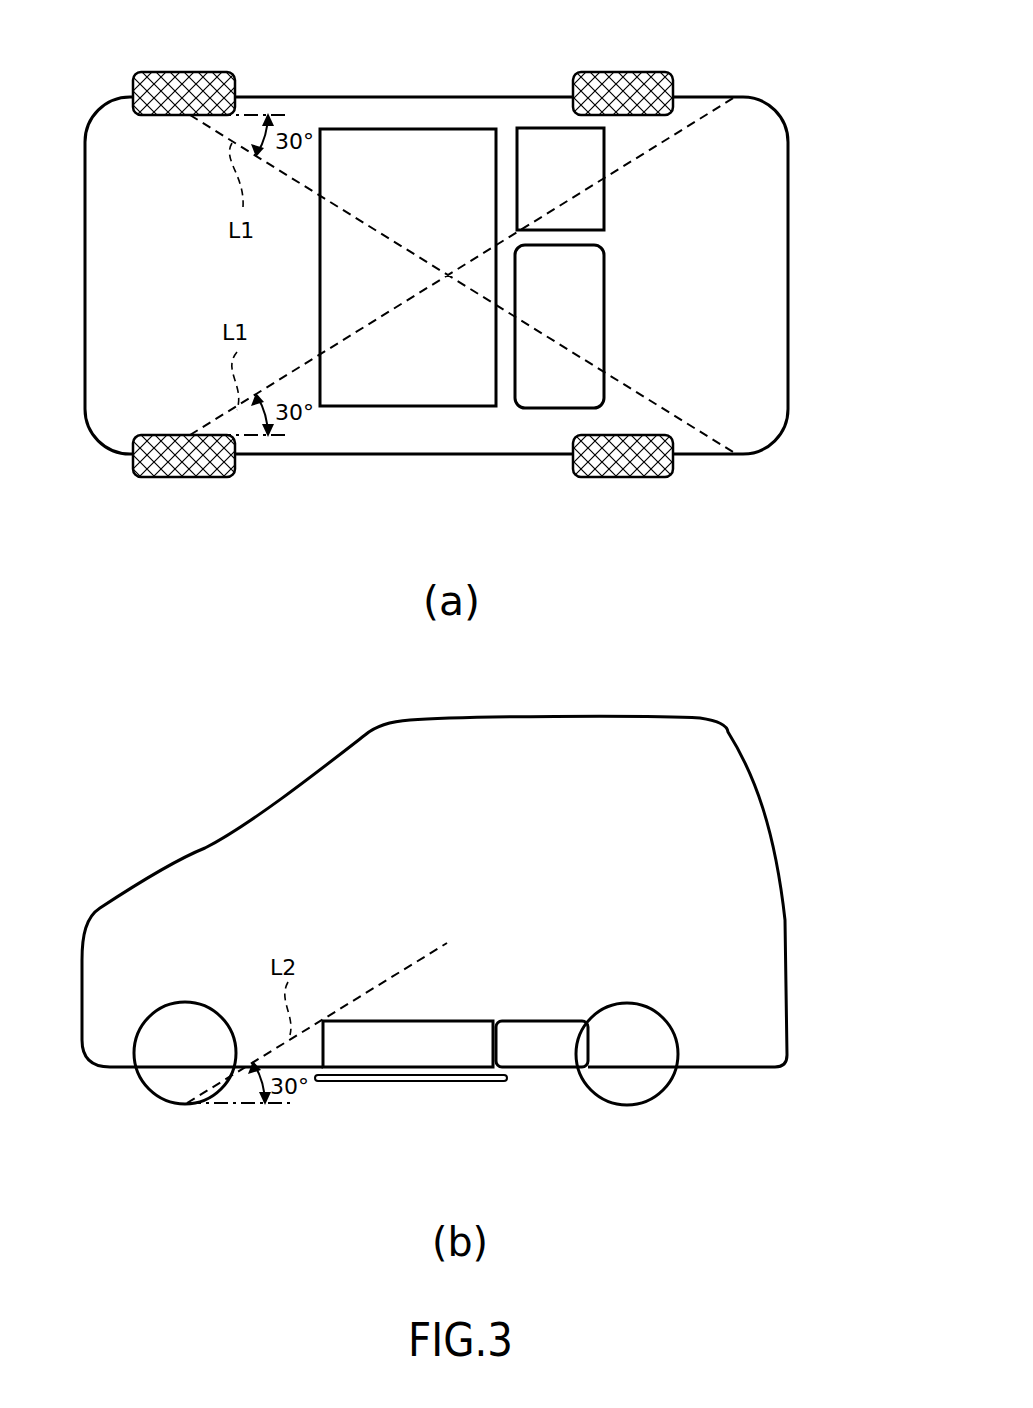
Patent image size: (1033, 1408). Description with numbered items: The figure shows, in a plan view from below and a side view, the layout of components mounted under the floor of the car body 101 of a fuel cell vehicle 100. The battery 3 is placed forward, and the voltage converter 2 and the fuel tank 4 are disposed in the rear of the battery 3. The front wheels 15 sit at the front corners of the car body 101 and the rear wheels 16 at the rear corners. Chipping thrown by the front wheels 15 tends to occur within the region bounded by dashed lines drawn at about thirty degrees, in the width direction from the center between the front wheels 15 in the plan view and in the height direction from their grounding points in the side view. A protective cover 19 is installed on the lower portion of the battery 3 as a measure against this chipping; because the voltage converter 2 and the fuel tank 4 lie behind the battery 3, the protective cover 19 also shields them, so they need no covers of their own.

The fuel cell vehicle 100 is at (746, 92).
The car body 101 is at (290, 780).
The voltage converter 2 is at (542, 128).
The battery 3 is at (415, 129).
The fuel tank 4 is at (565, 408).
The front wheels 15 is at (190, 72).
The rear wheels 16 is at (668, 72).
The protective cover 19 is at (415, 1082).